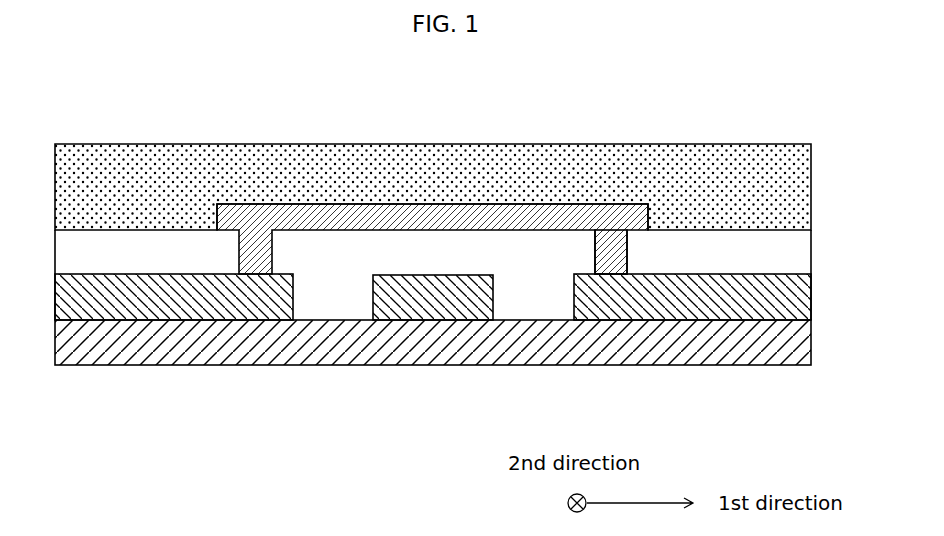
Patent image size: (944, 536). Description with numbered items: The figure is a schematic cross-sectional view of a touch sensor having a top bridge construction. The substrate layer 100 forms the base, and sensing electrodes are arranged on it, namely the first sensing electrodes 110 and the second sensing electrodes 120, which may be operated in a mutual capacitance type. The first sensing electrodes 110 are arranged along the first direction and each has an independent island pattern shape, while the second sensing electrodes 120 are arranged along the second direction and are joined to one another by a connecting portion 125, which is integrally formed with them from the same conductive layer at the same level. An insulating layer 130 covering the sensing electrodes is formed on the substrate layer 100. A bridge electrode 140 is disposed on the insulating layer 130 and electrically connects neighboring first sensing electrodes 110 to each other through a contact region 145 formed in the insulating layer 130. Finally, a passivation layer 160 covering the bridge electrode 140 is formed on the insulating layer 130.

The substrate layer 100 is at (747, 350).
The first sensing electrodes 110 is at (178, 312).
The second sensing electrodes 120 is at (435, 349).
The connecting portion 125 is at (438, 310).
The insulating layer 130 is at (332, 310).
The bridge electrode 140 is at (440, 205).
The contact region 145 is at (619, 241).
The passivation layer 160 is at (138, 163).